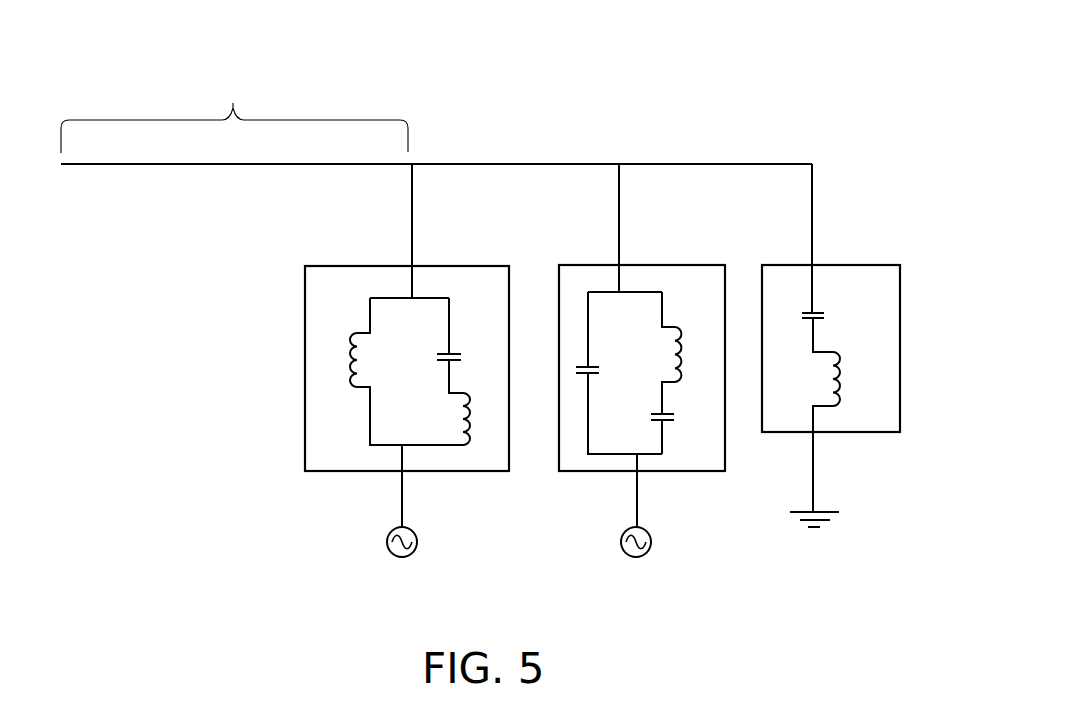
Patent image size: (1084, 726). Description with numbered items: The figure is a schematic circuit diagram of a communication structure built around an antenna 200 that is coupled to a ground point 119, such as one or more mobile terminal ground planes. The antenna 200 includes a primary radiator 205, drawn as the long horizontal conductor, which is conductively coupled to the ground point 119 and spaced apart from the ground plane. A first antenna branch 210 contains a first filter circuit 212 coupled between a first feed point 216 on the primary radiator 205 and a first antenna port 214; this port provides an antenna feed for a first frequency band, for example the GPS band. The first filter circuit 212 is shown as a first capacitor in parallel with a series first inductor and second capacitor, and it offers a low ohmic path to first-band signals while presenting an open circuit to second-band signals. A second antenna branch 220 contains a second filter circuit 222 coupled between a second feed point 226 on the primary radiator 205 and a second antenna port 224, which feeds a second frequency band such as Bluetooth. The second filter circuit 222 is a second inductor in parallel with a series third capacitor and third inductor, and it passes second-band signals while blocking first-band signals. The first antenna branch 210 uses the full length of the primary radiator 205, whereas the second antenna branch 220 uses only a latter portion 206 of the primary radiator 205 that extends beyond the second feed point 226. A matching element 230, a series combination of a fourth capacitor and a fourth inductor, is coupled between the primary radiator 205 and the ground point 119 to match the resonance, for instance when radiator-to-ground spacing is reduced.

The antenna 200 is at (808, 54).
The primary radiator 205 is at (762, 163).
The latter portion of the primary radiator 206 is at (234, 113).
The first antenna branch 210 is at (619, 164).
The first filter circuit 212 is at (603, 265).
The first antenna port 214 is at (623, 532).
The first feed point 216 is at (619, 164).
The second antenna branch 220 is at (410, 164).
The second filter circuit 222 is at (316, 266).
The second antenna port 224 is at (392, 532).
The second feed point 226 is at (412, 164).
The matching element 230 is at (792, 264).
The ground point 119 is at (828, 512).